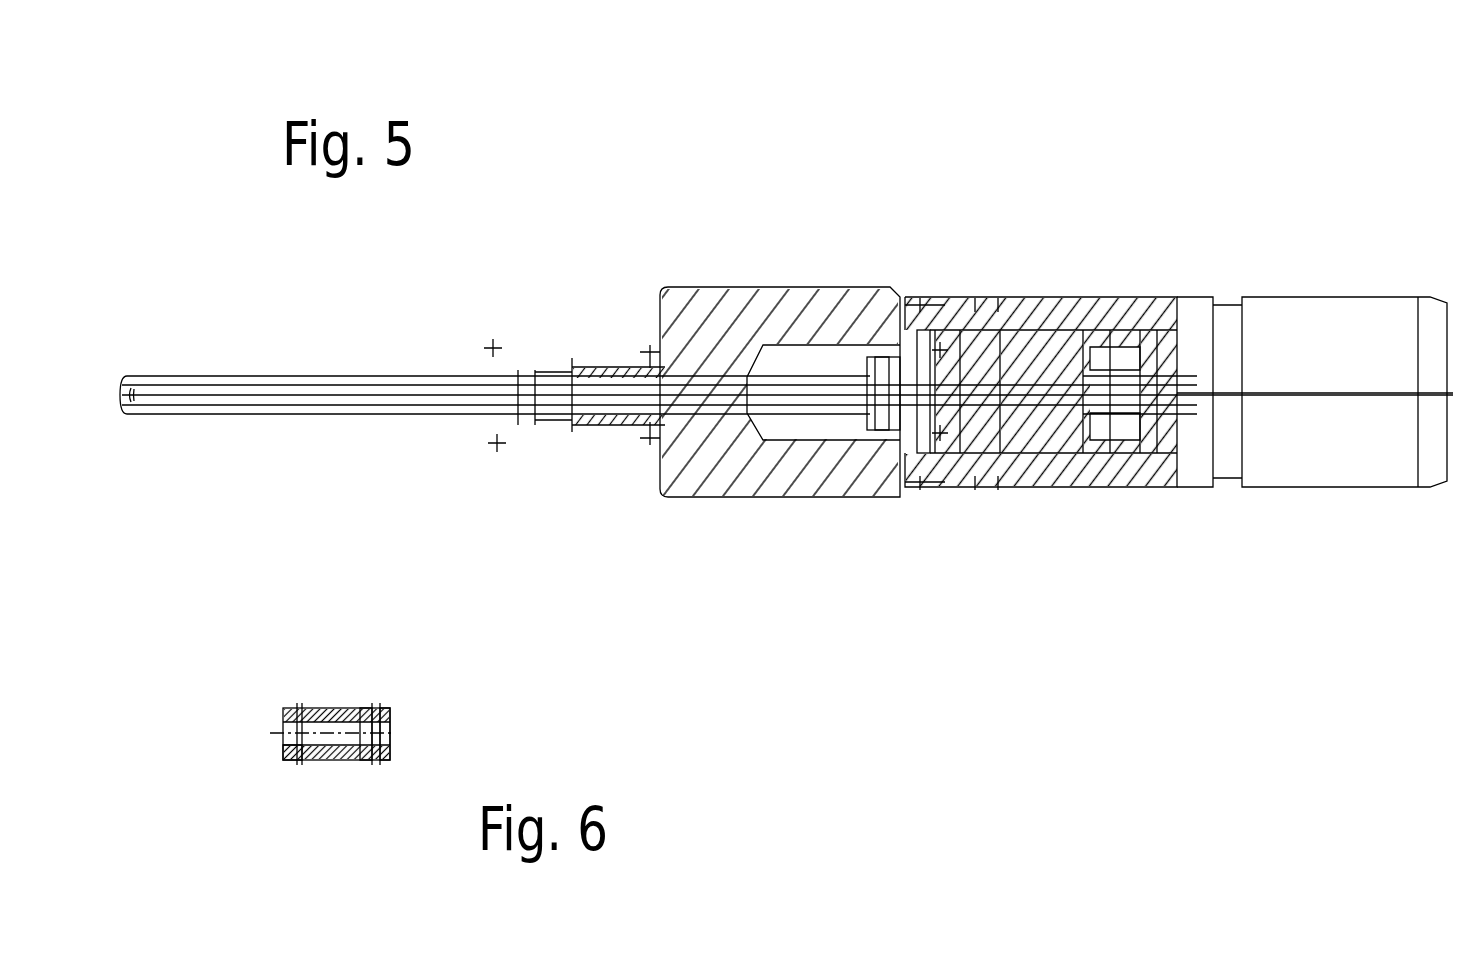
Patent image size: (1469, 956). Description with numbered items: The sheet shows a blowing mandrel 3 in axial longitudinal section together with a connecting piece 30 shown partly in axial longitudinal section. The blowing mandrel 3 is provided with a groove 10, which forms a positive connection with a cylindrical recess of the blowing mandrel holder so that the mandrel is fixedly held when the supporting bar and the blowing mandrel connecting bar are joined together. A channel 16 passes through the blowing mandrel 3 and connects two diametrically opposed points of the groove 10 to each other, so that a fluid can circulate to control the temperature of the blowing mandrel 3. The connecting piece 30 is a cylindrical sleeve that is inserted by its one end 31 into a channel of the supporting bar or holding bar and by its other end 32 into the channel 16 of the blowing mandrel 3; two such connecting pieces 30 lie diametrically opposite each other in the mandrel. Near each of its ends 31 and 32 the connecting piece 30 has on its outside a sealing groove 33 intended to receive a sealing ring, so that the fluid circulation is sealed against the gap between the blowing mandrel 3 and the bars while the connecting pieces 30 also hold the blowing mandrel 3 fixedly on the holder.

In FIG. 5, the blowing mandrel 3 is at (1343, 193).
In FIG. 5, the groove 10 is at (1095, 297).
In FIG. 5, the channel 16 is at (1088, 488).
In FIG. 6, the connecting piece 30 is at (327, 708).
In FIG. 6, the one end 31 is at (380, 708).
In FIG. 6, the other end 32 is at (288, 760).
In FIG. 6, the sealing groove 33 is at (365, 708).